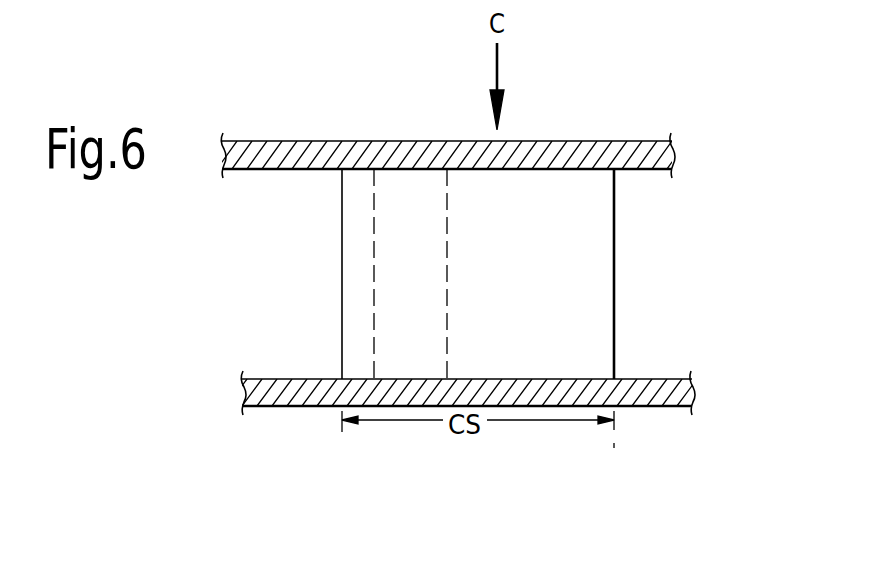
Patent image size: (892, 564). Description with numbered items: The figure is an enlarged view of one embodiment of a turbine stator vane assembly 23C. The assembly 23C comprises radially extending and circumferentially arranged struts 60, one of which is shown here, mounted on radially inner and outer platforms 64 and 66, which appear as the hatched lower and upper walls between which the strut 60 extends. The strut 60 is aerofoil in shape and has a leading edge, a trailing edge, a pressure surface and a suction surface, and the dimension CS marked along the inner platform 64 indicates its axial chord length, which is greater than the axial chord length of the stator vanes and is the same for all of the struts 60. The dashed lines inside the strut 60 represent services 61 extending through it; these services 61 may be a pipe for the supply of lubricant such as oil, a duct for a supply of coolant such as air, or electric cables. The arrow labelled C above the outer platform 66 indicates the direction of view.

The radially outer platform 66 is at (603, 153).
The radially inner platform 64 is at (638, 389).
The strut 60 is at (341, 209).
The services 61 is at (374, 288).
The turbine stator vane assembly 23C is at (649, 247).